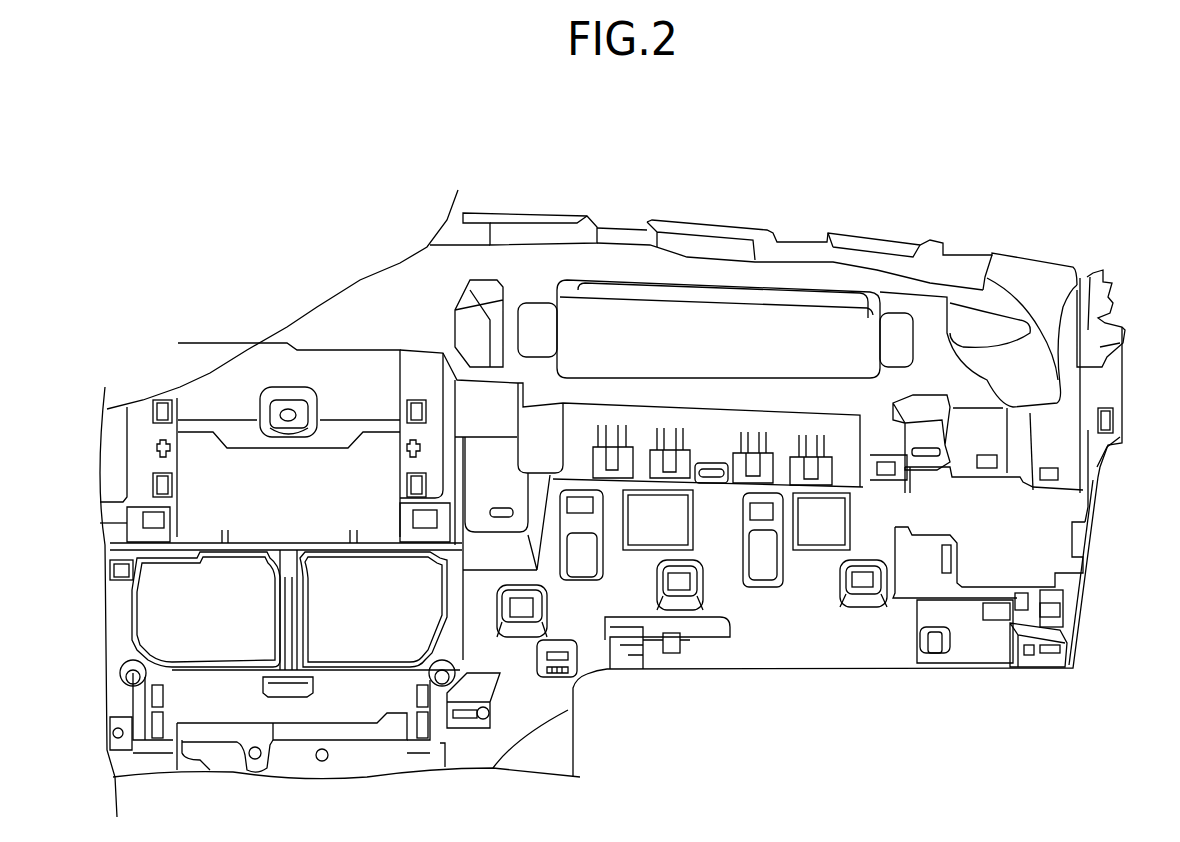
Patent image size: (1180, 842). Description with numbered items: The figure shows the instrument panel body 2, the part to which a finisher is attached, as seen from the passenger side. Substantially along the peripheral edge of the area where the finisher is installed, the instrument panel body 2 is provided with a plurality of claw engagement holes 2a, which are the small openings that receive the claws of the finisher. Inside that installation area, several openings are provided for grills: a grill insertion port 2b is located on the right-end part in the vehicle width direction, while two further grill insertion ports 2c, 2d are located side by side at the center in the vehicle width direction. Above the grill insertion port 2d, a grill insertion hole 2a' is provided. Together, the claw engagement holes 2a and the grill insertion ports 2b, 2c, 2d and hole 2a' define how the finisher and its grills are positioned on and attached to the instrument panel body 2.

The instrument panel body 2 is at (720, 228).
The claw engagement holes 2a is at (817, 592).
The grill insertion hole 2a' is at (200, 504).
The grill insertion port 2b is at (1068, 512).
The grill insertion port 2c is at (347, 643).
The grill insertion port 2d is at (225, 645).